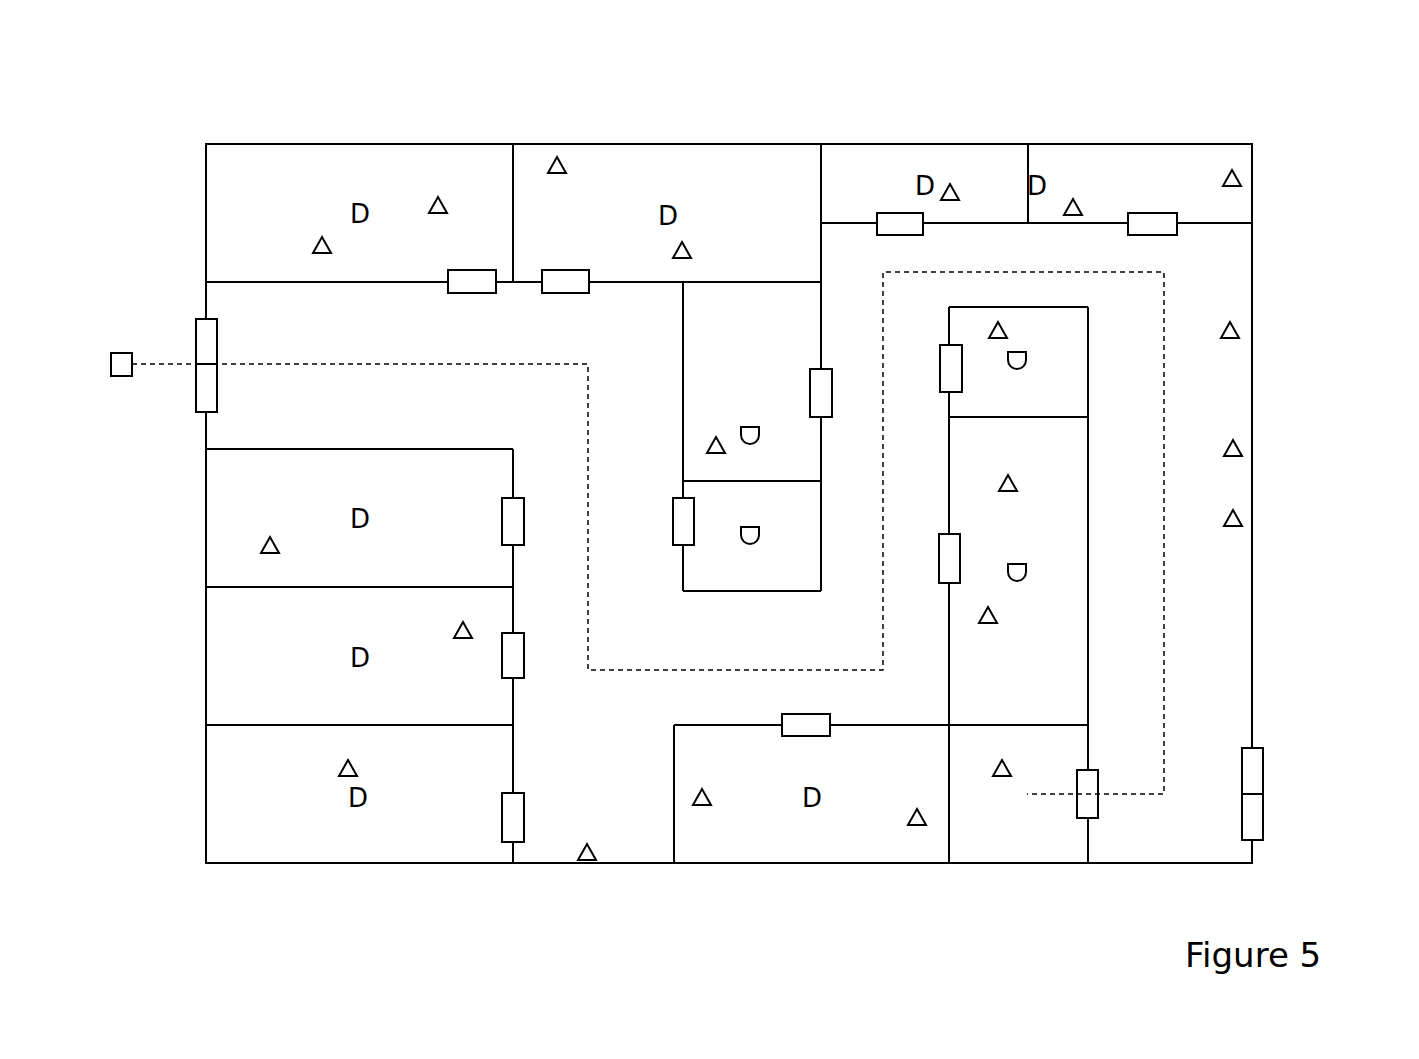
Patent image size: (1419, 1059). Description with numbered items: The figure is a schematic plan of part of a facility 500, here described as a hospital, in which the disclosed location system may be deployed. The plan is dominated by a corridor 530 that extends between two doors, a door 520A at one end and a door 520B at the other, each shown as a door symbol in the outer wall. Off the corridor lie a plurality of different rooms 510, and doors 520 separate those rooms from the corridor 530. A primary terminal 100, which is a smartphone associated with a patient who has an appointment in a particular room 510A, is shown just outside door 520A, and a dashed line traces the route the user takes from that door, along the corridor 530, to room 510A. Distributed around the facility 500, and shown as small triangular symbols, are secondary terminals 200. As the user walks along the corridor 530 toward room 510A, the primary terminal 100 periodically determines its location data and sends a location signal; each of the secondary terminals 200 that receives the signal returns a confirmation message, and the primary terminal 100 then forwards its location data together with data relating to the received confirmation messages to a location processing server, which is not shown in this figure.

The facility 500 is at (1313, 118).
The corridor 530 is at (384, 342).
The primary terminal 100 is at (106, 357).
The door 520A is at (206, 412).
The door 520B is at (1265, 817).
The doors 520 is at (500, 528).
The rooms 510 is at (313, 558).
The room 510A is at (1007, 835).
The secondary terminals 200 is at (1230, 188).